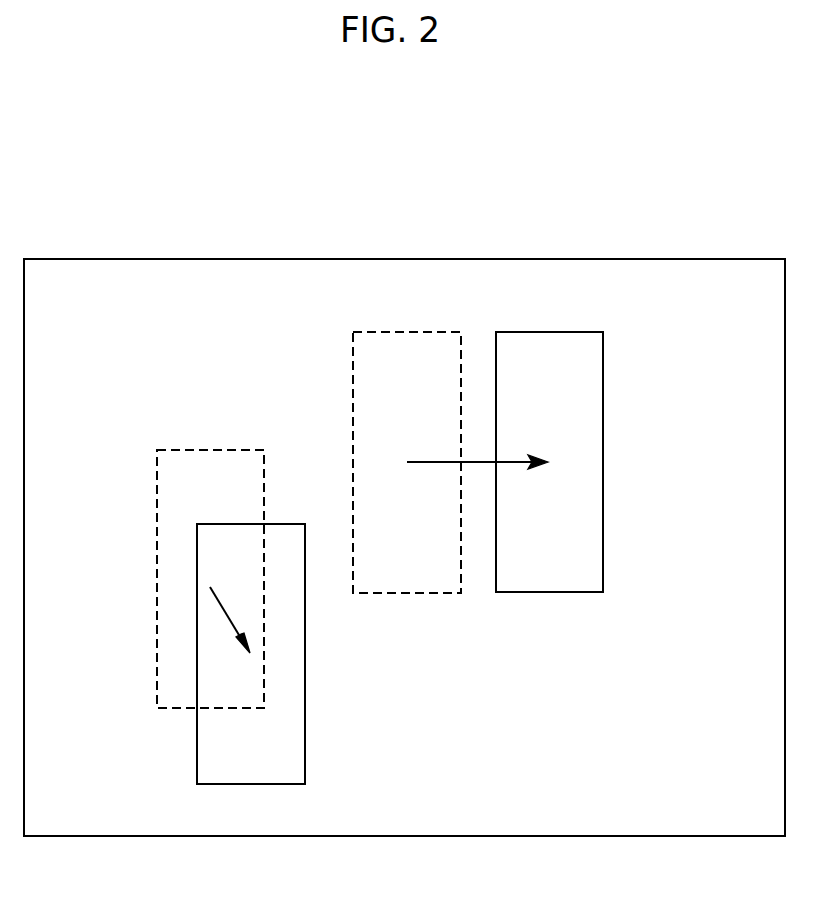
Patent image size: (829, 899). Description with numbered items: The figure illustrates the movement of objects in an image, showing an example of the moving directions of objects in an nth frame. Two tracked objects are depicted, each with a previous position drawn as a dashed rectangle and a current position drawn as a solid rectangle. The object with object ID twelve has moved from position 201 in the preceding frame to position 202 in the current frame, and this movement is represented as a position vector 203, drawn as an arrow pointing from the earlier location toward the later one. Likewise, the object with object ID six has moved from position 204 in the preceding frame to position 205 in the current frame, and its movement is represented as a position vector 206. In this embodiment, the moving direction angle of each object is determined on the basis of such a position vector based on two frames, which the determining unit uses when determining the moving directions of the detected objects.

The position 201 is at (214, 450).
The position 202 is at (275, 524).
The position vector 203 is at (233, 621).
The position 204 is at (410, 332).
The position 205 is at (553, 332).
The position vector 206 is at (510, 458).